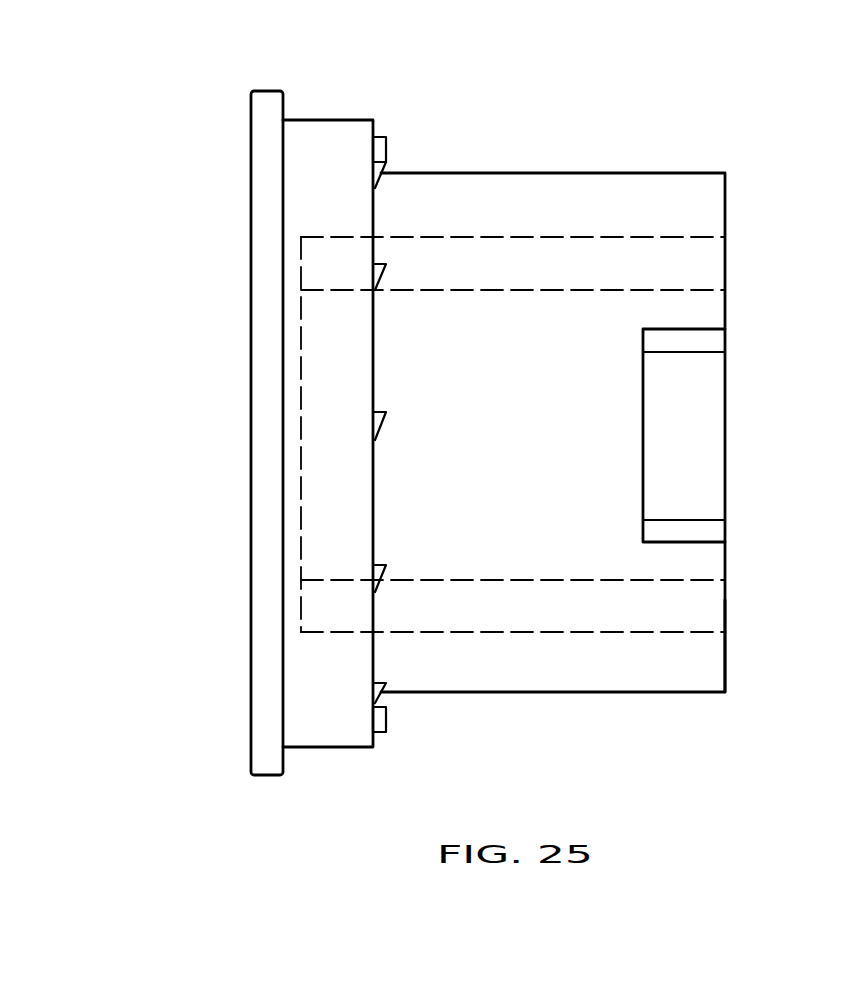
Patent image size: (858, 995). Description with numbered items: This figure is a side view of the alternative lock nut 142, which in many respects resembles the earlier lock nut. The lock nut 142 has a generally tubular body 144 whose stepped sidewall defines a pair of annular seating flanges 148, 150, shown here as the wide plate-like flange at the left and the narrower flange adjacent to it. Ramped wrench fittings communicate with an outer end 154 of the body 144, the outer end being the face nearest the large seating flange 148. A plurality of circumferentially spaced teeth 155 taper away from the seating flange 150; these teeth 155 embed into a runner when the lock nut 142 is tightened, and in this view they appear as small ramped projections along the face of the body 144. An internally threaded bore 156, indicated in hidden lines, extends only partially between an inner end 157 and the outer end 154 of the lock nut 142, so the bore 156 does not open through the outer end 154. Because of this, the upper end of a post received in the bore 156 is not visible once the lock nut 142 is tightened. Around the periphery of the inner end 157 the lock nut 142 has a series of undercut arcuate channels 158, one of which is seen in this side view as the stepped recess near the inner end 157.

The lock nut 142 is at (231, 512).
The tubular body 144 is at (582, 193).
The seating flange 148 is at (287, 101).
The seating flange 150 is at (375, 737).
The outer end 154 is at (250, 681).
The teeth 155 is at (386, 170).
The internally threaded bore 156 is at (648, 578).
The inner end 157 is at (726, 670).
The undercut arcuate channels 158 is at (700, 374).